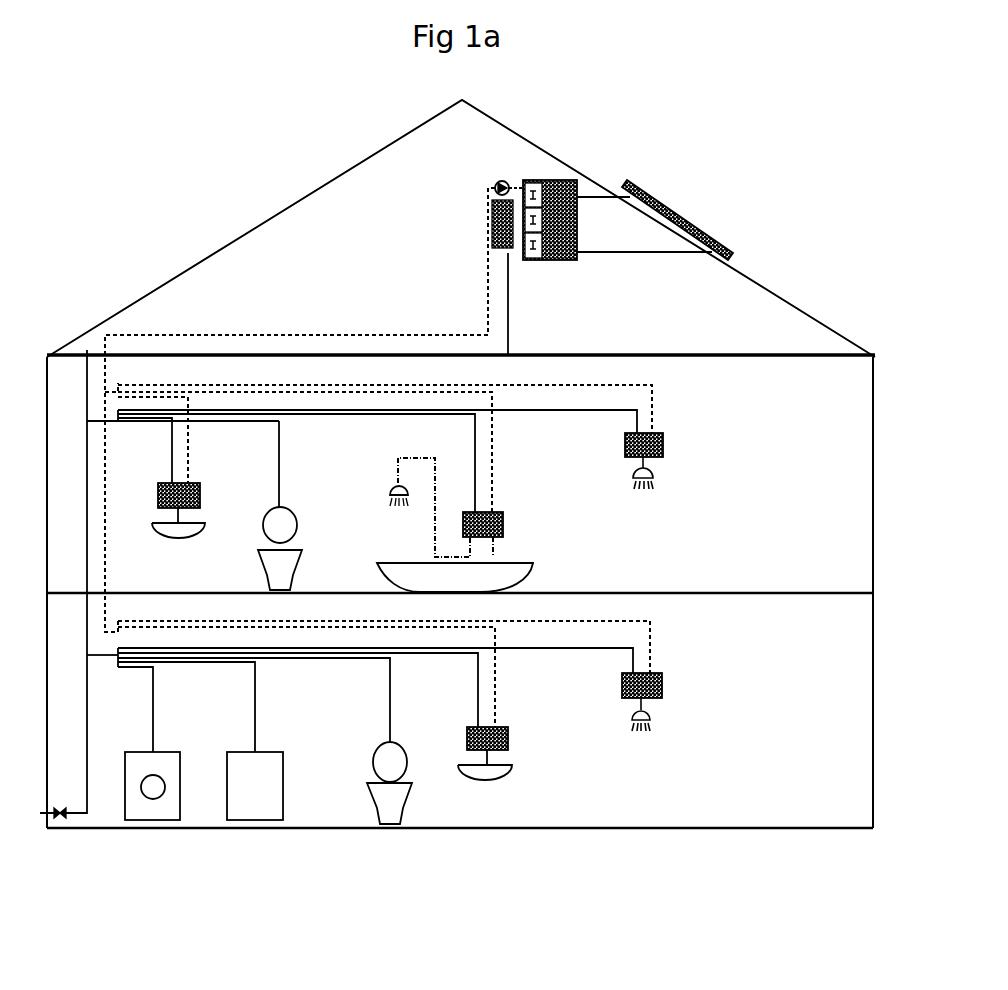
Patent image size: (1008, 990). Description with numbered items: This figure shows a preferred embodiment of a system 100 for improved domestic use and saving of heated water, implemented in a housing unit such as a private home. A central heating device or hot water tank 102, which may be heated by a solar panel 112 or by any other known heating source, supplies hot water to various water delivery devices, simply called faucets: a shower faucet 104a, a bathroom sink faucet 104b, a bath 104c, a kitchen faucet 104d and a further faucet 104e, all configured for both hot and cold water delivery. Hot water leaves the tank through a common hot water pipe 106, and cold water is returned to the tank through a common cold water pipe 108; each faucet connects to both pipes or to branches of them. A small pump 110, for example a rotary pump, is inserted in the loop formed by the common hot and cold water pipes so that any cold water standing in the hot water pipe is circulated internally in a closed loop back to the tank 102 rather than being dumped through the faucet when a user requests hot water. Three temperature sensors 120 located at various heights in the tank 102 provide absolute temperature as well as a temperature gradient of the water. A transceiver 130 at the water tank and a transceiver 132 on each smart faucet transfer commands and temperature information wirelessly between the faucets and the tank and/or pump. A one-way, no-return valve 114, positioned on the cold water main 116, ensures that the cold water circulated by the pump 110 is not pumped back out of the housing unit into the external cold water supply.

The system 100 is at (797, 81).
The hot water tank 102 is at (562, 177).
The shower faucet 104a is at (715, 486).
The bathroom sink faucet 104b is at (198, 544).
The bath faucet 104c is at (480, 525).
The kitchen faucet 104d is at (523, 758).
The faucet 104e is at (685, 706).
The common hot water pipe 106 is at (512, 312).
The common cold water pipe 108 is at (484, 313).
The pump 110 is at (503, 178).
The solar panel 112 is at (689, 212).
The one-way valve 114 is at (60, 822).
The cold water main 116 is at (92, 773).
The temperature sensors 120 is at (548, 190).
The transceiver 130 is at (490, 223).
The transceiver 132 is at (668, 445).